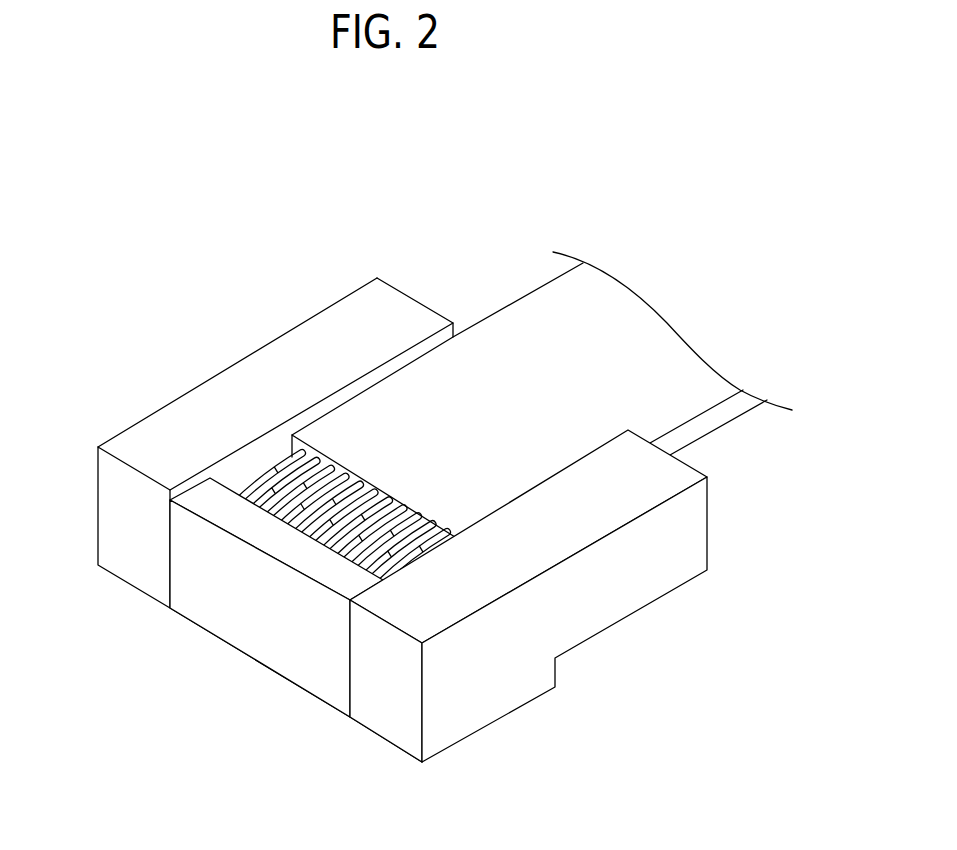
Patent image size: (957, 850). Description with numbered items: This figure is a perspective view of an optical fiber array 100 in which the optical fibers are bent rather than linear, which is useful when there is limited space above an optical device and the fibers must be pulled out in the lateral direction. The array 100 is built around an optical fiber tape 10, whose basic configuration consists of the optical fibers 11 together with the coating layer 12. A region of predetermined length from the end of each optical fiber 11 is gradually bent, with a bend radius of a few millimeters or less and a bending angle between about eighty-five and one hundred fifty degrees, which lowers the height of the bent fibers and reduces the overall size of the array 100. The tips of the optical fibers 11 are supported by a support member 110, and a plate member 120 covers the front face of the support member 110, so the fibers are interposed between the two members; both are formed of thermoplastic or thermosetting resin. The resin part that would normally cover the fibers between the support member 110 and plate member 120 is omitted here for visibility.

The optical fiber array 100 is at (416, 548).
The optical fiber tape 10 is at (236, 288).
The optical fiber 11 is at (277, 470).
The coating layer 12 is at (343, 417).
The support member 110 is at (385, 715).
The plate member 120 is at (248, 642).